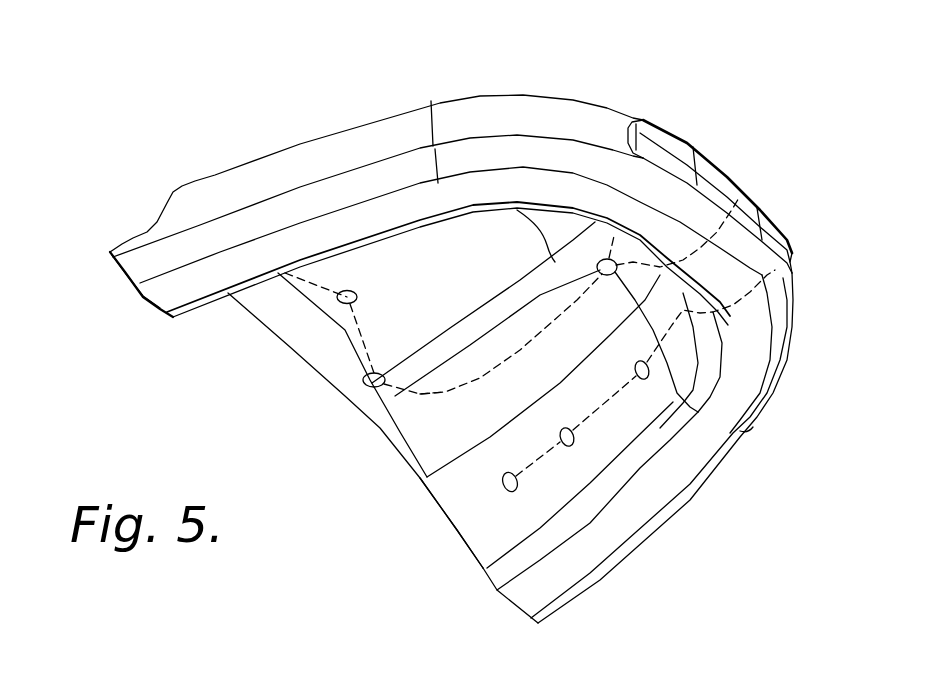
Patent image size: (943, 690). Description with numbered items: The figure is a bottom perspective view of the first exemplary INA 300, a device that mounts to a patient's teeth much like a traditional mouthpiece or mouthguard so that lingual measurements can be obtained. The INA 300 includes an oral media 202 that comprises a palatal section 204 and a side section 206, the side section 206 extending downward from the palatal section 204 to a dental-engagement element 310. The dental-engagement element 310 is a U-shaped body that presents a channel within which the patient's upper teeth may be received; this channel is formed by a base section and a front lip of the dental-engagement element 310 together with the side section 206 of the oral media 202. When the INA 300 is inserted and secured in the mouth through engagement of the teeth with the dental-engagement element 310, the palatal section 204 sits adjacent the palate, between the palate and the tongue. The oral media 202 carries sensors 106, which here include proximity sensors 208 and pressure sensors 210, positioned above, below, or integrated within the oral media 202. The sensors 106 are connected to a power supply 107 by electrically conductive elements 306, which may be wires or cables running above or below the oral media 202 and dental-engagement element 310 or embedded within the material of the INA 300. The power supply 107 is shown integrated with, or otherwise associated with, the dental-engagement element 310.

The INA 300 is at (218, 80).
The power supply 107 is at (730, 192).
The dental-engagement element 310 is at (147, 297).
The oral media 202 is at (422, 416).
The palatal section 204 is at (303, 360).
The side section 206 is at (487, 545).
The sensors 106 is at (341, 360).
The proximity sensors 208 is at (600, 268).
The pressure sensors 210 is at (635, 371).
The electrically conductive elements 306 is at (430, 398).